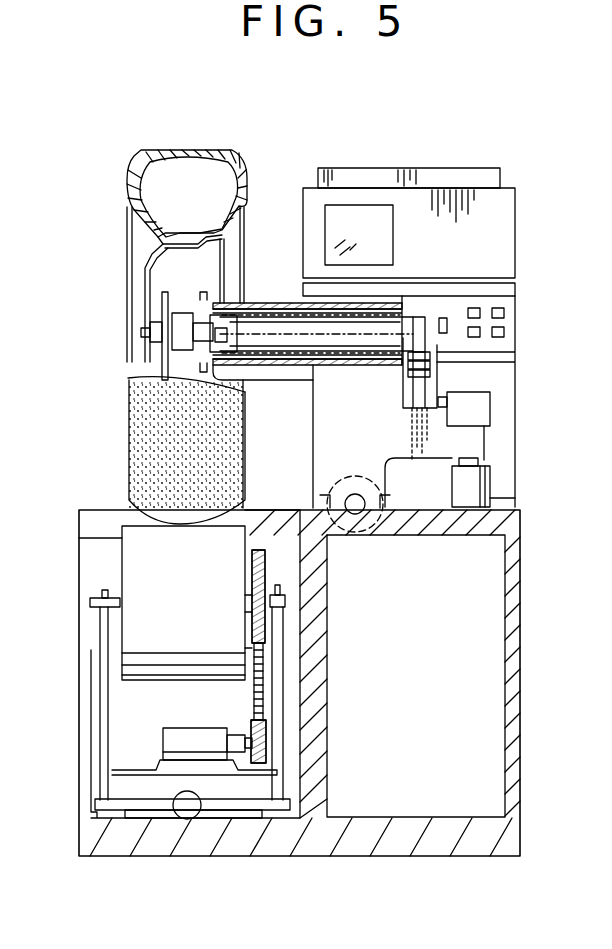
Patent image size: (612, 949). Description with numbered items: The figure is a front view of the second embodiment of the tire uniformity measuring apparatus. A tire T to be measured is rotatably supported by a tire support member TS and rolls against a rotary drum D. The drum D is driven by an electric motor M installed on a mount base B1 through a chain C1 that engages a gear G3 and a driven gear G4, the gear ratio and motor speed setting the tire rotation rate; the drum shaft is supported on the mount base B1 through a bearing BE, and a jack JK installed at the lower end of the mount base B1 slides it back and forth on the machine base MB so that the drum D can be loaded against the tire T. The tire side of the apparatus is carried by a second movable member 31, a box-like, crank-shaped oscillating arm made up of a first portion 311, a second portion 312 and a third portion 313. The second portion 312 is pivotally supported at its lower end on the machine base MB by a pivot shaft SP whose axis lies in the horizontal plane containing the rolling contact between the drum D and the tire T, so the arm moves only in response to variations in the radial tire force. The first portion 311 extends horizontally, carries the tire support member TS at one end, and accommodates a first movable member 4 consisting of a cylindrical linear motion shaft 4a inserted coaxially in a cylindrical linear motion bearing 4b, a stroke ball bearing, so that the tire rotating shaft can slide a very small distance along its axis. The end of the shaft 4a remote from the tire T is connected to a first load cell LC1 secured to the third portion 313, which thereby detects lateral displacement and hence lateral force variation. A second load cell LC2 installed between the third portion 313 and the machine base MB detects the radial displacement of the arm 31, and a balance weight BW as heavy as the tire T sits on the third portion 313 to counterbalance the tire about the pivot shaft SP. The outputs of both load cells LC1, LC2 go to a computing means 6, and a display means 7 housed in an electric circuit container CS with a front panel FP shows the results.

The tire T is at (208, 150).
The tire support member TS is at (160, 318).
The first movable member 4 is at (317, 330).
The cylindrical linear motion shaft 4a is at (354, 336).
The cylindrical linear motion bearing 4b is at (370, 366).
The second movable member 31 is at (265, 436).
The first portion 311 is at (268, 380).
The second portion 312 is at (318, 472).
The third portion 313 is at (484, 452).
The display means 7 is at (332, 168).
The front panel FP is at (470, 195).
The electric circuit container CS is at (515, 230).
The computing means 6 is at (529, 338).
The first load cell LC1 is at (430, 366).
The balance weight BW is at (490, 406).
The second load cell LC2 is at (490, 494).
The pivot shaft SP is at (362, 505).
The machine base MB is at (392, 845).
The rotary drum D is at (128, 568).
The bearing BE is at (102, 586).
The driven gear G4 is at (265, 575).
The chain C1 is at (254, 694).
The gear G3 is at (266, 746).
The electric motor M is at (175, 730).
The mount base B1 is at (170, 772).
The jack JK is at (185, 815).